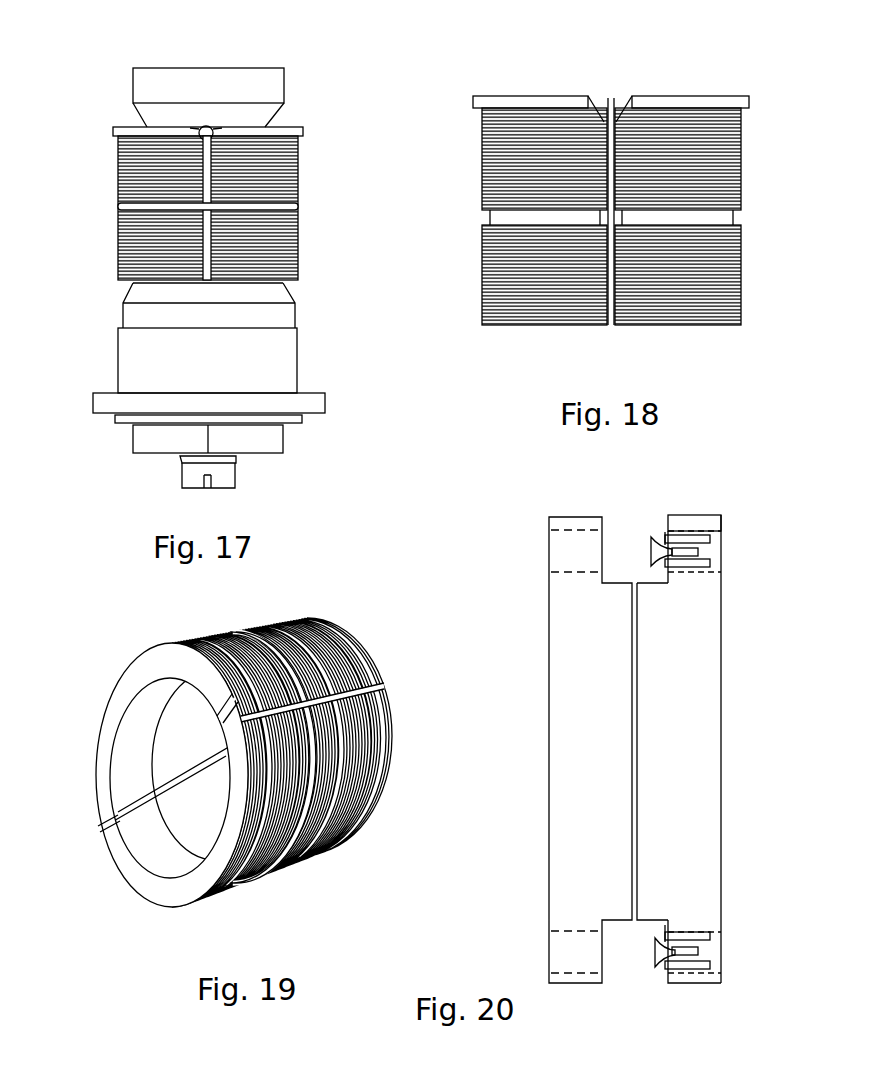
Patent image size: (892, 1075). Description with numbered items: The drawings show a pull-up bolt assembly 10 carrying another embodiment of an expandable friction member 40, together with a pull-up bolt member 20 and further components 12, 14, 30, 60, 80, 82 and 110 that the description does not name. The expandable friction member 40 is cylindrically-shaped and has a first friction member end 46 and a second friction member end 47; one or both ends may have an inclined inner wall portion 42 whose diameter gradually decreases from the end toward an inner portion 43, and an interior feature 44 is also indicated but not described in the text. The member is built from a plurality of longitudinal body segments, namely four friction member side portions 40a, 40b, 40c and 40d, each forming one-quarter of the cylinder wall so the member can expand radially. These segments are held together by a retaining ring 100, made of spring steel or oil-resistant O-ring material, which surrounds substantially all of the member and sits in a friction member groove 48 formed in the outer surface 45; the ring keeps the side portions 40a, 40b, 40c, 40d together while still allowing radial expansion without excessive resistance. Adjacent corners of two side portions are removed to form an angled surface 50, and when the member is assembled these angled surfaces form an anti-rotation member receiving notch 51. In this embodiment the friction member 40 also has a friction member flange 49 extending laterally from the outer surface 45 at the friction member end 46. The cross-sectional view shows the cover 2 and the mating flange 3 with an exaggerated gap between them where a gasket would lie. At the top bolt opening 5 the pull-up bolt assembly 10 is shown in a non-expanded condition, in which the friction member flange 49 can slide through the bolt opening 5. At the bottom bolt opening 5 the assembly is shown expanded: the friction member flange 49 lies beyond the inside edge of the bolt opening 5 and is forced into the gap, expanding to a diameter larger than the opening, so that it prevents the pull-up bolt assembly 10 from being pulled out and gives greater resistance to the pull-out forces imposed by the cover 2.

In FIG. 17, the pull-up bolt assembly 10 is at (86, 178).
In FIG. 17, the upper tool 12 is at (147, 68).
In FIG. 17, the lower tool 14 is at (157, 475).
In FIG. 17, the pull-up bolt member 20 is at (285, 85).
In FIG. 20, the pull-up bolt member 20 is at (651, 548).
In FIG. 17, the fastener nut 30 is at (208, 488).
In FIG. 17, the expandable friction member 40 is at (298, 168).
In FIG. 18, the expandable friction member 40 is at (468, 208).
In FIG. 19, the expandable friction member 40 is at (120, 632).
In FIG. 20, the expandable friction member 40 is at (693, 536).
In FIG. 18, the friction member side portion 40a is at (710, 327).
In FIG. 19, the friction member side portion 40a is at (326, 633).
In FIG. 18, the friction member side portion 40b is at (498, 327).
In FIG. 19, the friction member side portion 40b is at (392, 748).
In FIG. 19, the friction member side portion 40c is at (212, 898).
In FIG. 19, the friction member side portion 40d is at (92, 732).
In FIG. 19, the inclined inner wall portion 42 is at (135, 822).
In FIG. 19, the inner portion 43 is at (160, 838).
In FIG. 19, the bore 44 is at (125, 795).
In FIG. 18, the outer surface 45 is at (525, 130).
In FIG. 19, the outer surface 45 is at (360, 830).
In FIG. 18, the first friction member end 46 is at (690, 96).
In FIG. 19, the first friction member end 46 is at (100, 815).
In FIG. 18, the second friction member end 47 is at (630, 327).
In FIG. 19, the second friction member end 47 is at (390, 727).
In FIG. 18, the friction member groove 48 is at (738, 215).
In FIG. 19, the friction member groove 48 is at (308, 727).
In FIG. 17, the friction member flange 49 is at (304, 131).
In FIG. 18, the friction member flange 49 is at (478, 97).
In FIG. 19, the friction member flange 49 is at (165, 645).
In FIG. 20, the friction member flange 49 is at (668, 530).
In FIG. 18, the angled surface 50 is at (595, 105).
In FIG. 19, the angled surface 50 is at (218, 730).
In FIG. 18, the anti-rotation member receiving notch 51 is at (617, 98).
In FIG. 17, the body 60 is at (118, 352).
In FIG. 17, the base block 80 is at (133, 446).
In FIG. 17, the plate 82 is at (115, 420).
In FIG. 17, the retaining ring 100 is at (298, 206).
In FIG. 17, the pin 110 is at (206, 126).
In FIG. 20, the bolt opening 5 is at (721, 530).
In FIG. 20, the mating flange 3 is at (591, 755).
In FIG. 20, the cover 2 is at (686, 755).